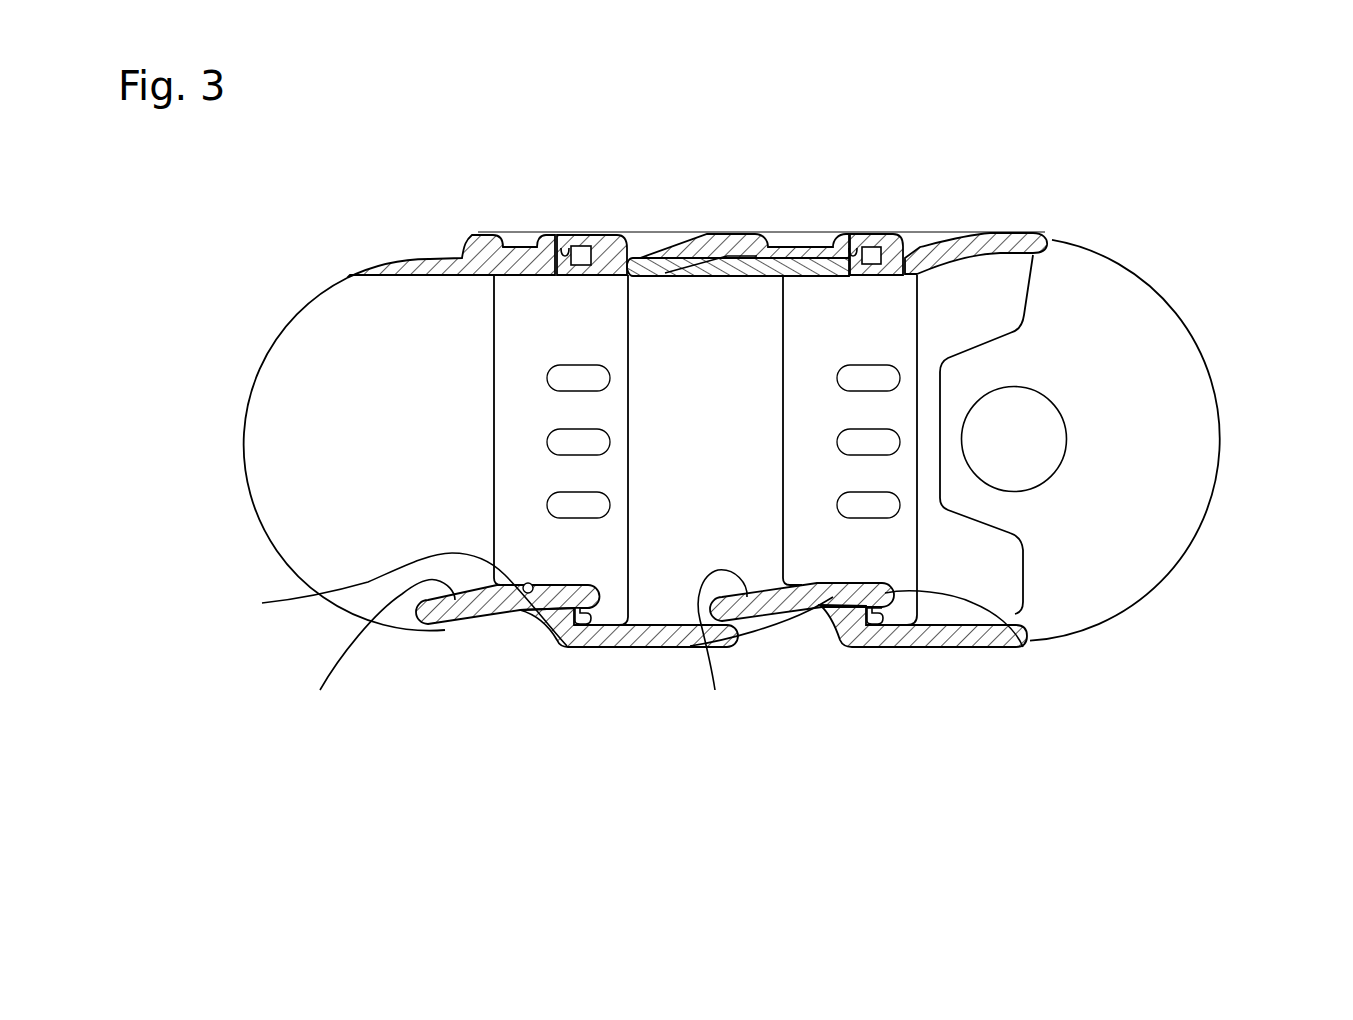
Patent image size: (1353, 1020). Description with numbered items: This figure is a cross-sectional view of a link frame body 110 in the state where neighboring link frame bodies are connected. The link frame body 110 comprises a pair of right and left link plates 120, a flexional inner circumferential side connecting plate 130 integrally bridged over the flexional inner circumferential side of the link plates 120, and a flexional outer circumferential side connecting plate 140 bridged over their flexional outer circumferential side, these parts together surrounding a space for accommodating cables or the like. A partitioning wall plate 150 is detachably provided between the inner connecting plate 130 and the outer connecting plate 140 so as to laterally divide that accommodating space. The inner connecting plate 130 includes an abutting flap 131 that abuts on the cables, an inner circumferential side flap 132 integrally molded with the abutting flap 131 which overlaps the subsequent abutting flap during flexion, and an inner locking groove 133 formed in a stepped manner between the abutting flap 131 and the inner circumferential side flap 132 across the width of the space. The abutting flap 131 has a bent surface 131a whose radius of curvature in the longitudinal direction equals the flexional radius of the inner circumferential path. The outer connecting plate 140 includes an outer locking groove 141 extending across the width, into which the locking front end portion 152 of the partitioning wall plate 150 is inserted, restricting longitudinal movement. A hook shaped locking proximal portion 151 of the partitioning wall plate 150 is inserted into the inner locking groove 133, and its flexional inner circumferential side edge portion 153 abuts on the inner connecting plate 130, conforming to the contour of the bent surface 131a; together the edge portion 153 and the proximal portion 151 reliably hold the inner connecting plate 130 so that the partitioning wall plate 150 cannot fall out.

The link frame body 110 is at (703, 173).
The link plate 120 is at (275, 465).
The flexional inner circumferential side connecting plate 130 is at (586, 632).
The abutting flap 131 is at (460, 612).
The bent surface 131a is at (558, 647).
The inner circumferential side flap 132 is at (655, 642).
The inner locking groove 133 is at (574, 624).
The flexional outer circumferential side connecting plate 140 is at (447, 258).
The outer locking groove 141 is at (564, 246).
The partitioning wall plate 150 is at (522, 326).
The hook shaped locking proximal portion 151 is at (603, 628).
The locking front end portion 152 is at (594, 268).
The flexional inner circumferential side edge portion 153 is at (1067, 733).